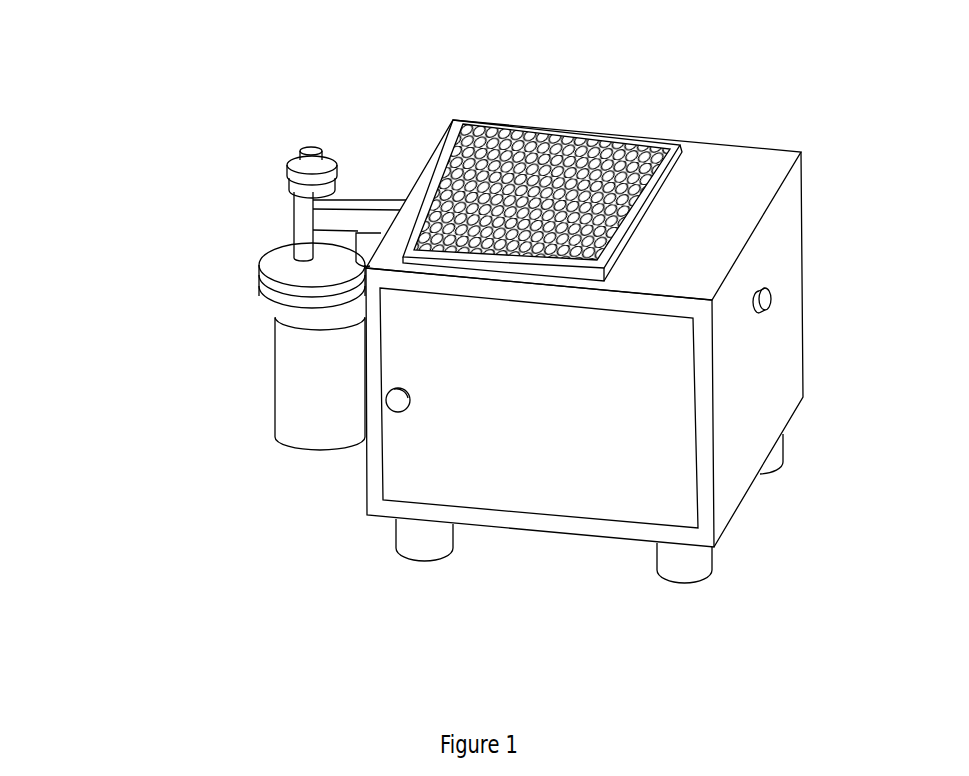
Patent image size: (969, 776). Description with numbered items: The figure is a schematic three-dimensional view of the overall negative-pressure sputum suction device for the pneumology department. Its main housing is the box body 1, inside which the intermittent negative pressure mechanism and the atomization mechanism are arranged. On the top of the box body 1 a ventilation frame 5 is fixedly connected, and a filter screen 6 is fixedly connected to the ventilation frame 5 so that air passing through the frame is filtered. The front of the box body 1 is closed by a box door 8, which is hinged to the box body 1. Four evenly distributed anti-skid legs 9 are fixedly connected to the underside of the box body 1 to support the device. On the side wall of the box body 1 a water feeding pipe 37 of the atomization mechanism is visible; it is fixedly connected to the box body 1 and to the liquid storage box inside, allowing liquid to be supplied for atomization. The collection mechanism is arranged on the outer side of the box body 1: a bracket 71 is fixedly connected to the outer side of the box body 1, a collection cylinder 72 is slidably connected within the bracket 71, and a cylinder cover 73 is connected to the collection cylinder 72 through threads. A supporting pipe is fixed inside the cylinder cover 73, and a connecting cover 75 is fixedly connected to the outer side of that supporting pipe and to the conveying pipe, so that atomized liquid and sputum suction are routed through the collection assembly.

The box body 1 is at (735, 192).
The ventilation frame 5 is at (650, 205).
The filter screen 6 is at (620, 160).
The box door 8 is at (668, 440).
The anti-skid leg 9 is at (685, 572).
The water feeding pipe 37 is at (768, 295).
The bracket 71 is at (290, 320).
The collection cylinder 72 is at (310, 397).
The cylinder cover 73 is at (302, 272).
The connecting cover 75 is at (305, 190).